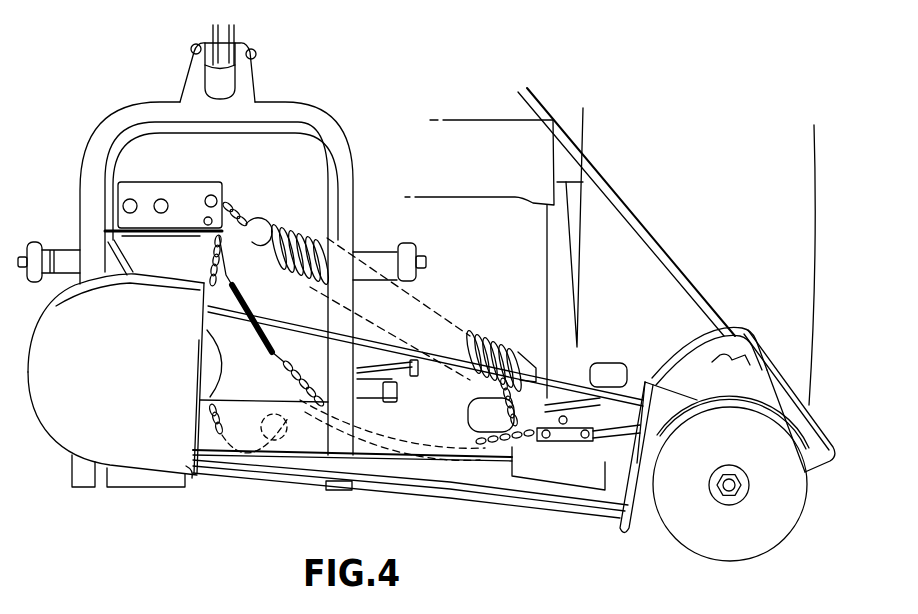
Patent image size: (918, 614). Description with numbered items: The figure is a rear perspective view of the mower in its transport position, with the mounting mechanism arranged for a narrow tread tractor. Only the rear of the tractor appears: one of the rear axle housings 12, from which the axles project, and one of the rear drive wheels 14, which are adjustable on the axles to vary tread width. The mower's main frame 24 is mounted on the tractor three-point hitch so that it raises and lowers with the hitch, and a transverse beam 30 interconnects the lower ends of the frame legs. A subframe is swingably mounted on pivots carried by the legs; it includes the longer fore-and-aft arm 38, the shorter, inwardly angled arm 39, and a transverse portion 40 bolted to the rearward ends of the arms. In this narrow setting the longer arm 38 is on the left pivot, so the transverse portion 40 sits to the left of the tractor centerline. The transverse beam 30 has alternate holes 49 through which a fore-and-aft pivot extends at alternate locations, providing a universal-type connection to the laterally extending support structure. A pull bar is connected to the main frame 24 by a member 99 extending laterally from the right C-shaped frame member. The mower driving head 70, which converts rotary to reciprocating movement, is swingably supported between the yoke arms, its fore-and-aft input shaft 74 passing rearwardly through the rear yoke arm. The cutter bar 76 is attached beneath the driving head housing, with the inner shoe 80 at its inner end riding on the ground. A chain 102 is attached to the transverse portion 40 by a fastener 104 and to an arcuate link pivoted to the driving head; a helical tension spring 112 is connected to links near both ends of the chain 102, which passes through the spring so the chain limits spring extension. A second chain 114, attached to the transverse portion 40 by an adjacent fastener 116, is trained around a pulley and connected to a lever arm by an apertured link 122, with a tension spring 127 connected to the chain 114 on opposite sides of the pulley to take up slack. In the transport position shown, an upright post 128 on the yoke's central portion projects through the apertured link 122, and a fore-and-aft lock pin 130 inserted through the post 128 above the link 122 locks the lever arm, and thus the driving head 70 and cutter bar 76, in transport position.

The rear axle housing 12 is at (467, 121).
The rear drive wheel 14 is at (815, 190).
The main frame 24 is at (334, 134).
The transverse beam 30 is at (200, 431).
The fore-and-aft arm 38 is at (133, 244).
The shorter arm 39 is at (290, 224).
The transverse portion 40 is at (140, 188).
The alternate holes 49 is at (272, 412).
The mower driving head 70 is at (737, 345).
The input shaft 74 is at (732, 489).
The cutter bar 76 is at (652, 236).
The inner shoe 80 is at (773, 373).
The member 99 is at (377, 398).
The chain 102 is at (487, 412).
The fastener 104 is at (216, 200).
The helical tension spring 112 is at (484, 342).
The second chain 114 is at (496, 462).
The fastener 116 is at (204, 218).
The apertured link 122 is at (576, 447).
The tension spring 127 is at (250, 302).
The upright post 128 is at (556, 443).
The lock pin 130 is at (564, 414).